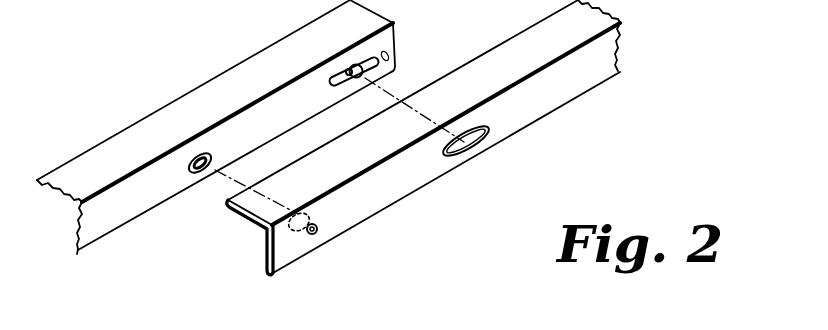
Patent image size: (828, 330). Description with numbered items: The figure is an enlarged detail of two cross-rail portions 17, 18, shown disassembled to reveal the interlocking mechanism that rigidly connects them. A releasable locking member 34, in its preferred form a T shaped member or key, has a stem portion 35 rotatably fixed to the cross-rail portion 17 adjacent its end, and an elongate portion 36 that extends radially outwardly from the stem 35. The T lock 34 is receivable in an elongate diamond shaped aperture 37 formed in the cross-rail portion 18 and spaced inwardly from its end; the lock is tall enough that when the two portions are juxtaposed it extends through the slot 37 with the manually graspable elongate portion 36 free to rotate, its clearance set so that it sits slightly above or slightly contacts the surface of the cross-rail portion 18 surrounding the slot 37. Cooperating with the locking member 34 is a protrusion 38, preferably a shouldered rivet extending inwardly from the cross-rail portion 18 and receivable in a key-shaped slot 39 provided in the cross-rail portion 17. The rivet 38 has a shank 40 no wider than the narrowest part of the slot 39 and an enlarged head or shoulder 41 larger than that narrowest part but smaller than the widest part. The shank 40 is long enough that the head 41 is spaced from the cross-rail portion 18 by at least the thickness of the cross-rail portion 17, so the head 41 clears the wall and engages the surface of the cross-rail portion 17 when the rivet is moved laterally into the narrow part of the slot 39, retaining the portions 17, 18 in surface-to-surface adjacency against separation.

The cross-rail portion 17 is at (64, 162).
The cross-rail portion 18 is at (608, 57).
The releasable locking member 34 is at (388, 55).
The stem portion 35 is at (360, 77).
The elongate portion 36 is at (343, 82).
The elongate diamond shaped aperture 37 is at (488, 137).
The protrusion 38 is at (316, 234).
The key-shaped slot 39 is at (199, 175).
The shank 40 is at (298, 233).
The enlarged head 41 is at (260, 238).